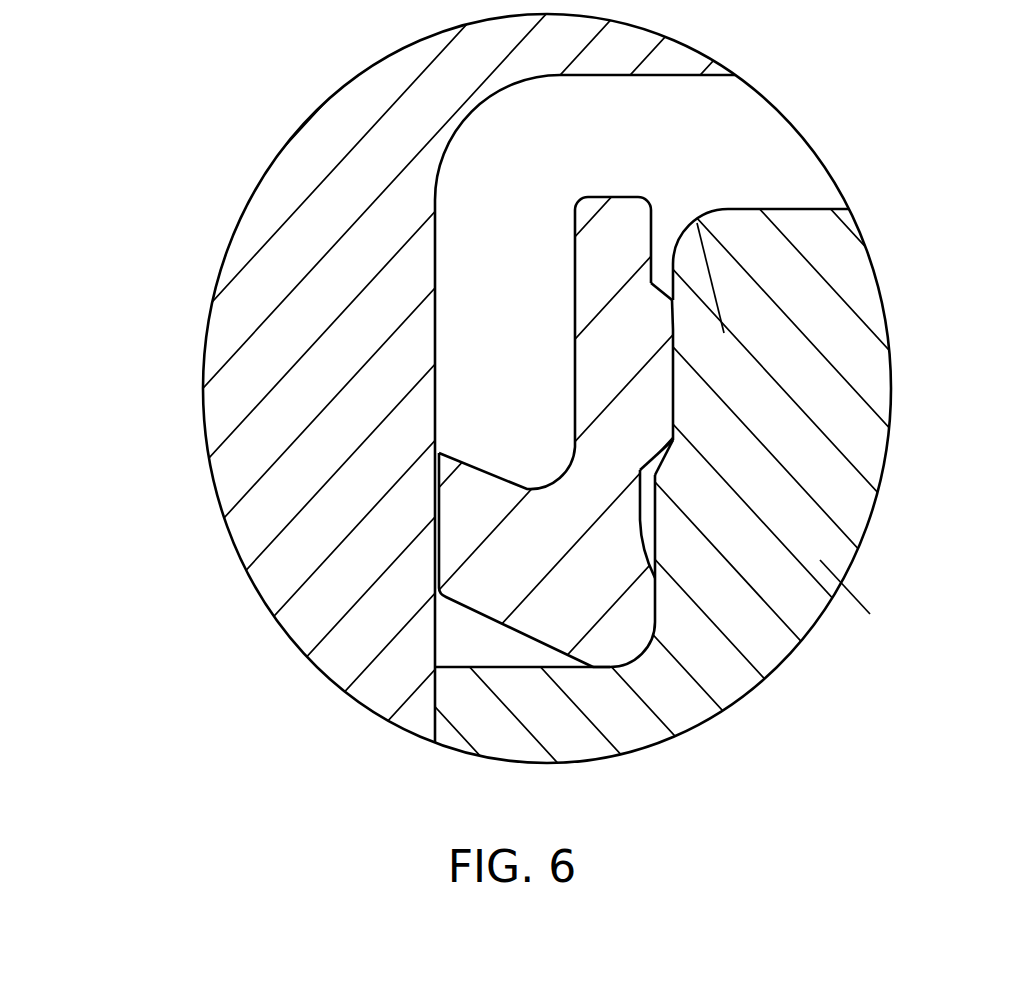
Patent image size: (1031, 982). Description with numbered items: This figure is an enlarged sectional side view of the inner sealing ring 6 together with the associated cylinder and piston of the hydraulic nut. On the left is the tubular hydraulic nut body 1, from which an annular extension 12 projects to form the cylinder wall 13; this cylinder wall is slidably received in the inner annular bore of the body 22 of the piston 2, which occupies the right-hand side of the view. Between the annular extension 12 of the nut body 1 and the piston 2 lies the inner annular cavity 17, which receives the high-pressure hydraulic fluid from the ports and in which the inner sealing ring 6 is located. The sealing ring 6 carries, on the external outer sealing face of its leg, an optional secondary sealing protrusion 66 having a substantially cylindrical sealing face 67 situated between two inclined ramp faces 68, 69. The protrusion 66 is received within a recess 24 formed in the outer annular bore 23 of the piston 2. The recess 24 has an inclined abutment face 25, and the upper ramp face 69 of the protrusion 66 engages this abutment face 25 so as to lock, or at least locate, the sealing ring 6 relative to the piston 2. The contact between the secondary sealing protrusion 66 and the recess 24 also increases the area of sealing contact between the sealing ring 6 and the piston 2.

The hydraulic nut body 1 is at (303, 247).
The piston 2 is at (878, 253).
The inner sealing ring 6 is at (540, 393).
The annular extension 12 is at (288, 482).
The cylinder wall 13 is at (433, 628).
The inner annular cavity 17 is at (468, 635).
The body of the piston 22 is at (783, 580).
The outer annular bore 23 is at (660, 547).
The recess 24 is at (653, 458).
The inclined abutment face 25 is at (670, 298).
The secondary sealing protrusion 66 is at (612, 422).
The sealing face 67 is at (655, 373).
The inclined ramp face 68 is at (663, 455).
The upper ramp face 69 is at (658, 292).